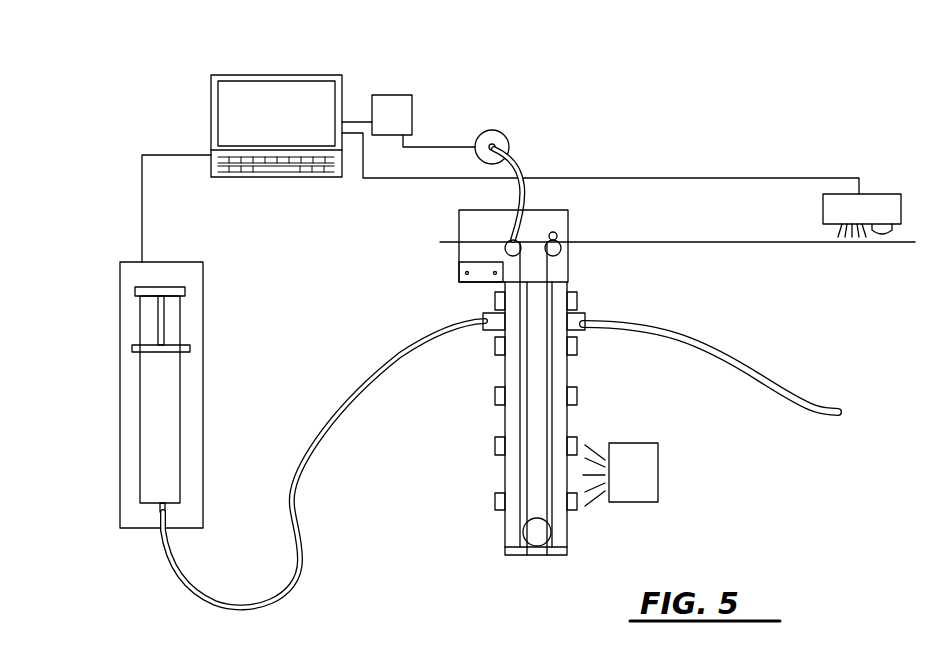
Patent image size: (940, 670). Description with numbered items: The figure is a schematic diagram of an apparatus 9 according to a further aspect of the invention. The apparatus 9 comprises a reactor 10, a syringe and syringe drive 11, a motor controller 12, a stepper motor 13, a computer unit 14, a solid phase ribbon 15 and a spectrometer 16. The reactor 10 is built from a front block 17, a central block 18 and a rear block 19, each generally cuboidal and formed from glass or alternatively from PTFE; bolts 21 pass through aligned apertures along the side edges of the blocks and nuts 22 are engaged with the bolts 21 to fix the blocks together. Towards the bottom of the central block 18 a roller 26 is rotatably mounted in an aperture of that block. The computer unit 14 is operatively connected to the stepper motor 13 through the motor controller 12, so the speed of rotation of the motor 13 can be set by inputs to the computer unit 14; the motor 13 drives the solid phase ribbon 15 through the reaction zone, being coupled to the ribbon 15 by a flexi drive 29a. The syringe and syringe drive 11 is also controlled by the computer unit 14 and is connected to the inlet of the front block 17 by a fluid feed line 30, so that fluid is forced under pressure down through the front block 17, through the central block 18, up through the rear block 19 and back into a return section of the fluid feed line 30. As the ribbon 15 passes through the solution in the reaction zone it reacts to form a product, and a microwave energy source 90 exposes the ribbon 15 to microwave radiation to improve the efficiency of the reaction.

The apparatus 9 is at (643, 76).
The reactor 10 is at (556, 427).
The syringe and syringe drive 11 is at (119, 328).
The motor controller 12 is at (412, 112).
The stepper motor 13 is at (503, 135).
The computer unit 14 is at (211, 125).
The solid phase ribbon 15 is at (448, 242).
The spectrometer 16 is at (878, 194).
The front block 17 is at (510, 544).
The central block 18 is at (537, 557).
The rear block 19 is at (560, 547).
The bolts 21 is at (497, 397).
The nuts 22 is at (578, 302).
The roller 26 is at (530, 527).
The flexi drive 29a is at (533, 167).
The fluid feed line 30 is at (302, 492).
The microwave energy source 90 is at (660, 472).